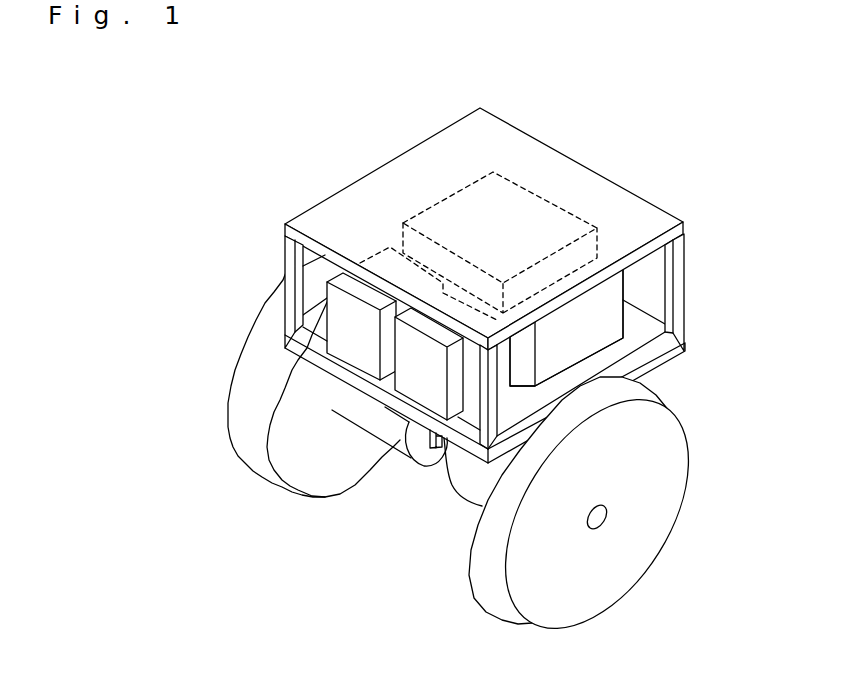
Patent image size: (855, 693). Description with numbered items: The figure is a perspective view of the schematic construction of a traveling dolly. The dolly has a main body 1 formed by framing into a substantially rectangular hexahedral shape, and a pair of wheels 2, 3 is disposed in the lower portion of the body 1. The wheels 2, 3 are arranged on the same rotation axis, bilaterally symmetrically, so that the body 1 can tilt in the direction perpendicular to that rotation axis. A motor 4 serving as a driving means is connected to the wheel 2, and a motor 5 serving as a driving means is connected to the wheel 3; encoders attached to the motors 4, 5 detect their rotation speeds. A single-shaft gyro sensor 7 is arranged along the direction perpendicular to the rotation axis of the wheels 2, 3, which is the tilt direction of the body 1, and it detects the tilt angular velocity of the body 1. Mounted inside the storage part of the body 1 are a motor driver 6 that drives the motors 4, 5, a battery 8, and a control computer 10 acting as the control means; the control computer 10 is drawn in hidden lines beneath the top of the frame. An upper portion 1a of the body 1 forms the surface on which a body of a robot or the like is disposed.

The main body 1 is at (578, 180).
The upper portion 1a is at (349, 195).
The right wheel 2 is at (242, 344).
The left wheel 3 is at (683, 473).
The motor 4 is at (375, 428).
The motor 5 is at (467, 484).
The motor driver 6 is at (613, 315).
The single-shaft gyro sensor 7 is at (432, 452).
The battery 8 is at (418, 380).
The control computer 10 is at (493, 172).